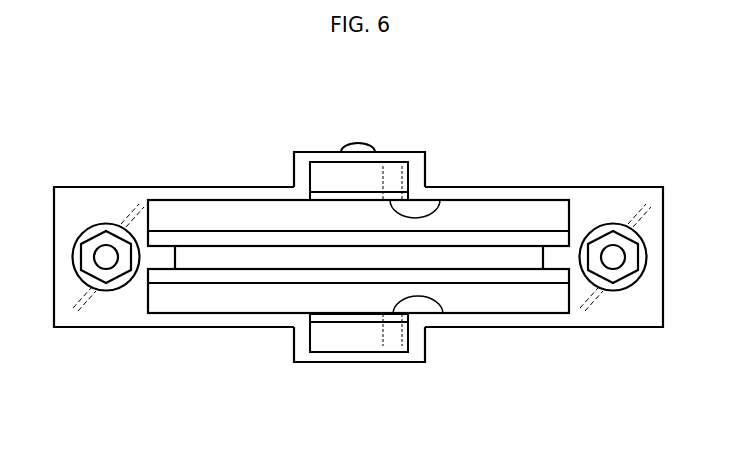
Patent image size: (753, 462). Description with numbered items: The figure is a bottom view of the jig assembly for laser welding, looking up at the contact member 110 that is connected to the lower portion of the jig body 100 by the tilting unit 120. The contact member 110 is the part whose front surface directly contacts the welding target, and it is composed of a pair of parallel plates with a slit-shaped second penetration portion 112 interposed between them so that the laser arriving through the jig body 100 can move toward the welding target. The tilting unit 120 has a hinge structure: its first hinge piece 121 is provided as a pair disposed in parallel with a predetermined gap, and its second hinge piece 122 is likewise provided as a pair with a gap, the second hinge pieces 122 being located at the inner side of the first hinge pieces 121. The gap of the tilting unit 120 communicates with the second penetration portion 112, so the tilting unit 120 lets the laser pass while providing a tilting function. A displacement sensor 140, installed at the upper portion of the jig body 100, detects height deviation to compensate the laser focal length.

The jig body 100 is at (116, 186).
The contact member 110 is at (482, 194).
The second penetration portion 112 is at (244, 256).
The tilting unit 120 is at (325, 152).
The first hinge piece 121 is at (395, 172).
The second hinge piece 122 is at (440, 200).
The displacement sensor 140 is at (356, 144).